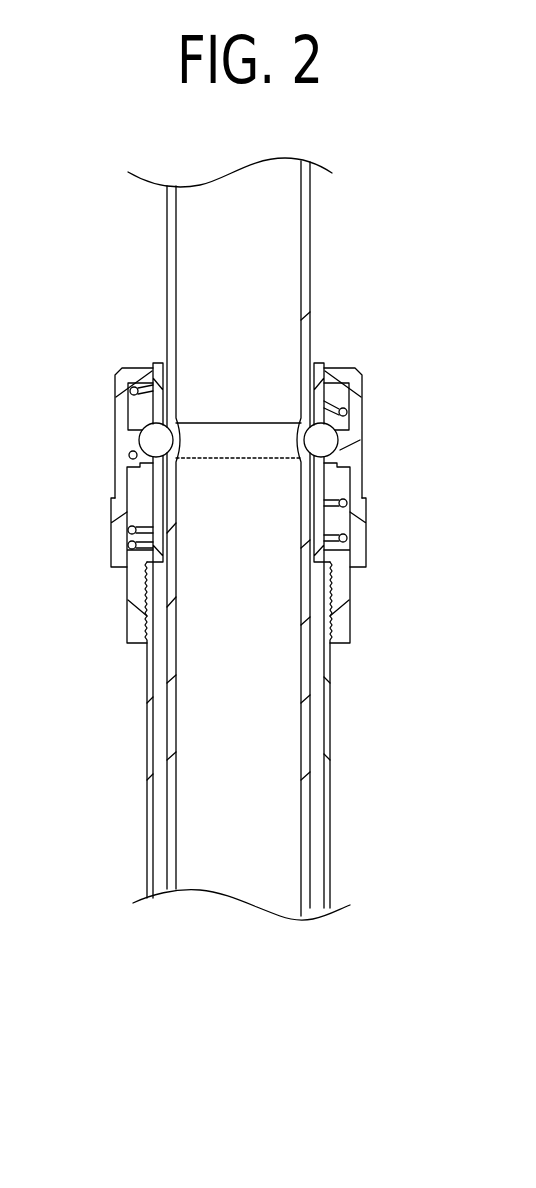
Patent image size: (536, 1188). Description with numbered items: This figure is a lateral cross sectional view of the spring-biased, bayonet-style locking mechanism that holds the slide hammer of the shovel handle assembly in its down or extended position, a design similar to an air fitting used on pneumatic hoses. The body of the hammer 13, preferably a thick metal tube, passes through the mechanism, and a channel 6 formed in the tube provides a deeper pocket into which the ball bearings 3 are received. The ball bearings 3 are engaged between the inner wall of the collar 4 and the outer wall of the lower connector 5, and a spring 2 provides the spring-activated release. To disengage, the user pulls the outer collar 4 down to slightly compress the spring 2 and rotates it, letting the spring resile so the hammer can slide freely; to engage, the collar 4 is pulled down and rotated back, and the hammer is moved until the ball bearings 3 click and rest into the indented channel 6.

The body of the hammer 13 is at (308, 252).
The channel 6 is at (273, 428).
The spring 2 is at (340, 493).
The ball bearings 3 is at (138, 443).
The collar 4 is at (110, 565).
The lower connector 5 is at (325, 518).